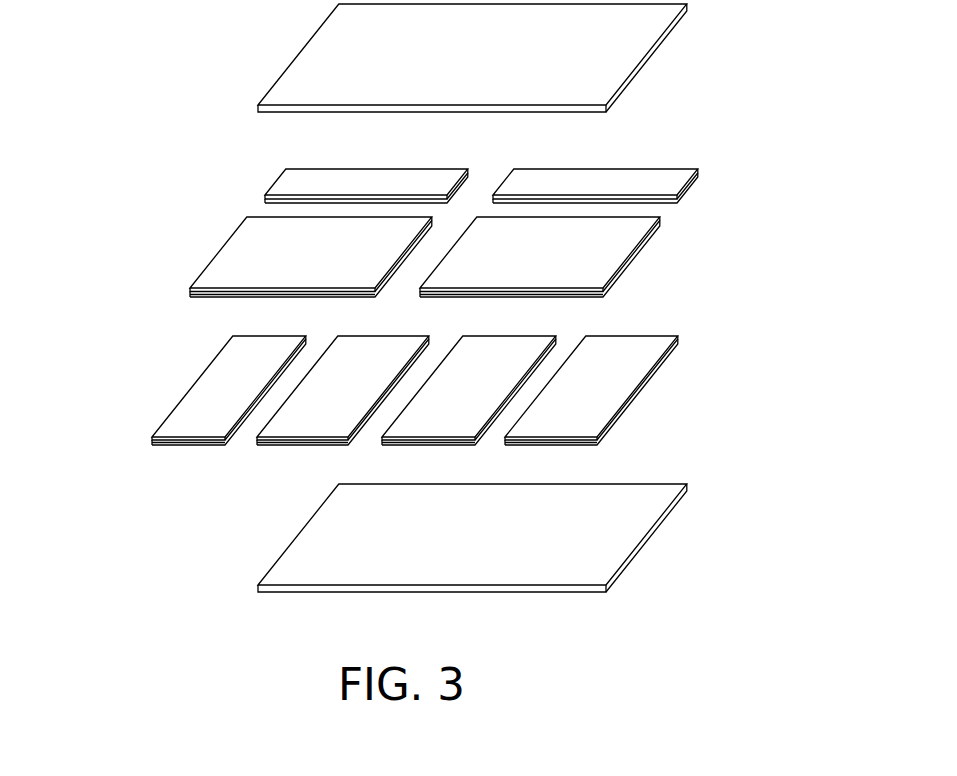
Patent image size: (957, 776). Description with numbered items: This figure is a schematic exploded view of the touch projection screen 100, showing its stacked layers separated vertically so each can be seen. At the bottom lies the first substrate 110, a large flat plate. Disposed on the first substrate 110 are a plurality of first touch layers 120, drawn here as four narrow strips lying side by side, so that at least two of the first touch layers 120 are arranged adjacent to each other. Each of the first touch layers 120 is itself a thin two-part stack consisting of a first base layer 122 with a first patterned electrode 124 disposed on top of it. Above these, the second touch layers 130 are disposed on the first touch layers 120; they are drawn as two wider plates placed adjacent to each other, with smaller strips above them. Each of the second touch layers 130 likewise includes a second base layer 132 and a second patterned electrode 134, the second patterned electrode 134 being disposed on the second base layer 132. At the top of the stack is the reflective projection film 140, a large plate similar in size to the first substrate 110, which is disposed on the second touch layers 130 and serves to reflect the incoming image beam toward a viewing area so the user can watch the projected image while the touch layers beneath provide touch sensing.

The touch projection screen 100 is at (402, 314).
The first substrate 110 is at (293, 572).
The first touch layers 120 is at (355, 408).
The first base layer 122 is at (172, 442).
The first patterned electrode 124 is at (172, 437).
The second touch layers 130 is at (383, 252).
The second base layer 132 is at (212, 292).
The second patterned electrode 134 is at (216, 288).
The reflective projection film 140 is at (293, 90).